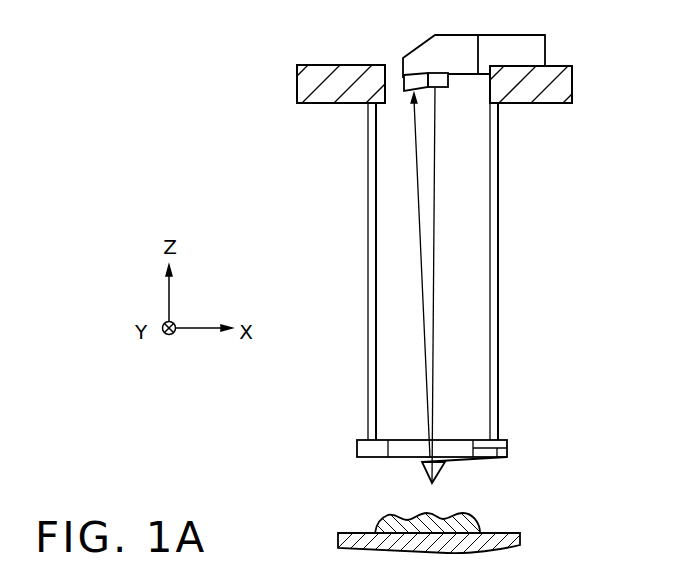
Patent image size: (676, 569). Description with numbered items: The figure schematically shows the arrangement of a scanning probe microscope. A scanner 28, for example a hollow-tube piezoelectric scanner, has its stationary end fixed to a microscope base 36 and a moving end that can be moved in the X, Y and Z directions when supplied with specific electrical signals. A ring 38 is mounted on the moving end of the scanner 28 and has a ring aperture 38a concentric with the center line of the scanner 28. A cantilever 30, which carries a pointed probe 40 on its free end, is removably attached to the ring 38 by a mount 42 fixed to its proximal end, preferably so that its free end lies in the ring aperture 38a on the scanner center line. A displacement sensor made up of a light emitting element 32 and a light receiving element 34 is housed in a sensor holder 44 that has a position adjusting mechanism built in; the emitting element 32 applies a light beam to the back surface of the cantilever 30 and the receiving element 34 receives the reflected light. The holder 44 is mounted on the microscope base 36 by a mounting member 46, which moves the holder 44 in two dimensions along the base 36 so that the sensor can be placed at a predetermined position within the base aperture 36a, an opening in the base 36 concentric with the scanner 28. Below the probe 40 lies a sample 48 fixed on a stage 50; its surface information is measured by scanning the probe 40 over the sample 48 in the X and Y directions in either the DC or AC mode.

The scanner 28 is at (498, 308).
The cantilever 30 is at (458, 473).
The light emitting element 32 is at (455, 77).
The light receiving element 34 is at (404, 92).
The microscope base 36 is at (297, 89).
The base aperture 36a is at (468, 102).
The ring 38 is at (357, 448).
The ring aperture 38a is at (399, 438).
The probe 40 is at (421, 464).
The mount 42 is at (507, 440).
The sensor holder 44 is at (413, 56).
The mounting member 46 is at (547, 48).
The sample 48 is at (378, 518).
The stage 50 is at (520, 537).